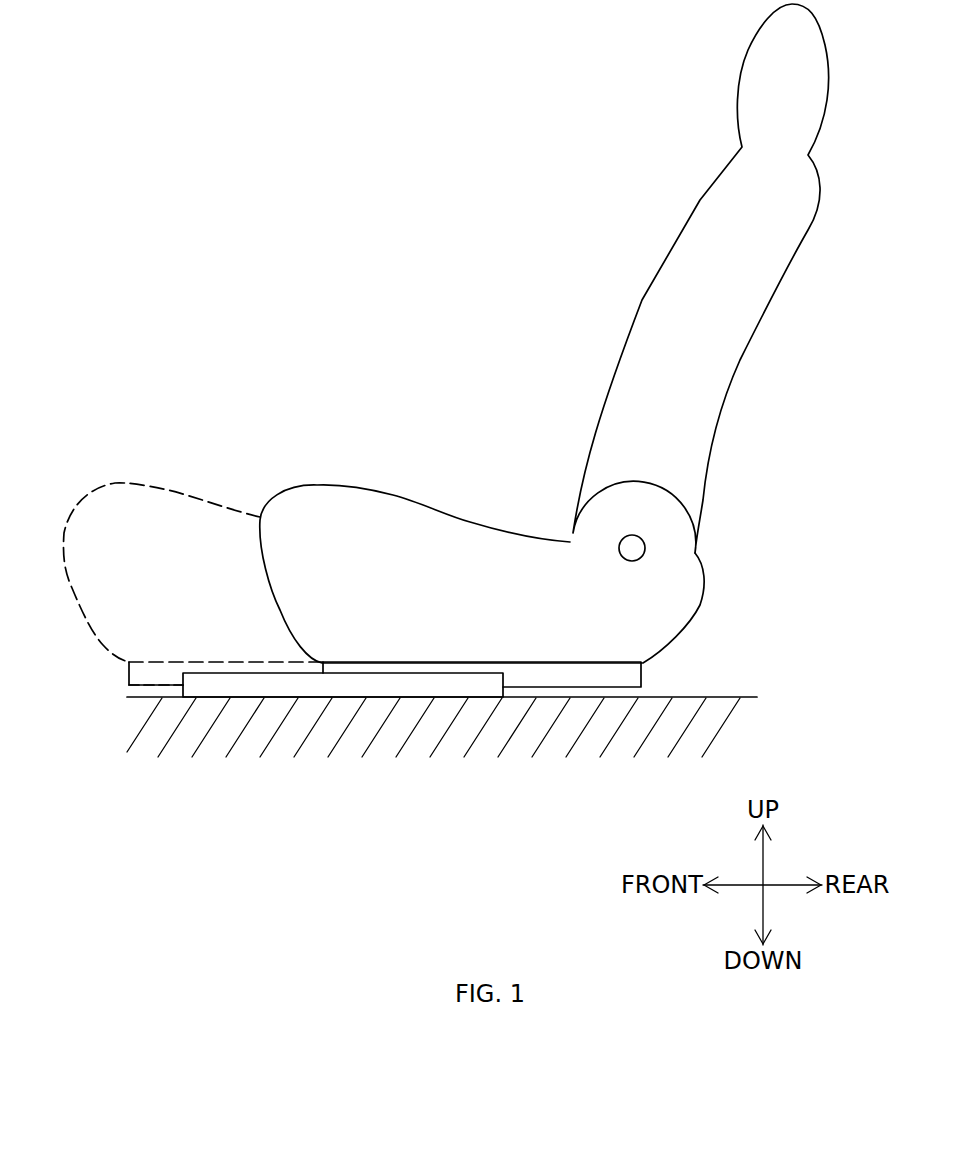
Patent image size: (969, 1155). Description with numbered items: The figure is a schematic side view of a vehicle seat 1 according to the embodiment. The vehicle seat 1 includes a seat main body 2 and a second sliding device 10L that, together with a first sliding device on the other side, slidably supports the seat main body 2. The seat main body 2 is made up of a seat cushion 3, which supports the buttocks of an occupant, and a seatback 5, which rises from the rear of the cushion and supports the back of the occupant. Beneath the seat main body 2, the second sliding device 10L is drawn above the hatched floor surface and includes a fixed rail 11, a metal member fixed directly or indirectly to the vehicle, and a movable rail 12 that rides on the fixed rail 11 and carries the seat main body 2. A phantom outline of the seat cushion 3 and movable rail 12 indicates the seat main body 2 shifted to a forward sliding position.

The vehicle seat 1 is at (435, 239).
The seat main body 2 is at (393, 494).
The seat cushion 3 is at (470, 522).
The seatback 5 is at (648, 283).
The second sliding device 10L is at (403, 731).
The fixed rail 11 is at (418, 685).
The movable rail 12 is at (628, 677).